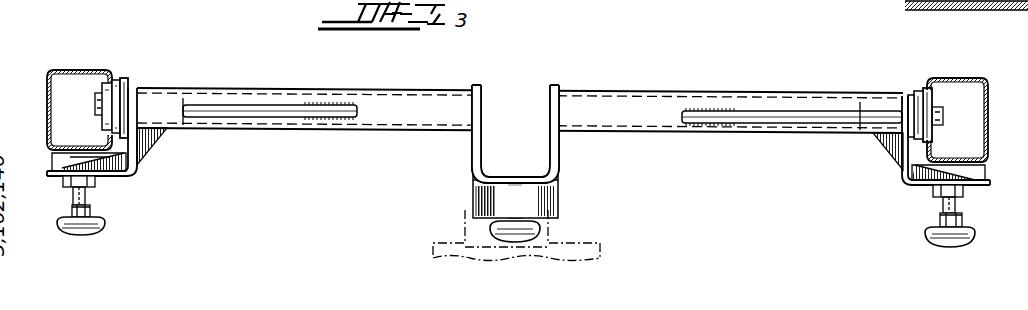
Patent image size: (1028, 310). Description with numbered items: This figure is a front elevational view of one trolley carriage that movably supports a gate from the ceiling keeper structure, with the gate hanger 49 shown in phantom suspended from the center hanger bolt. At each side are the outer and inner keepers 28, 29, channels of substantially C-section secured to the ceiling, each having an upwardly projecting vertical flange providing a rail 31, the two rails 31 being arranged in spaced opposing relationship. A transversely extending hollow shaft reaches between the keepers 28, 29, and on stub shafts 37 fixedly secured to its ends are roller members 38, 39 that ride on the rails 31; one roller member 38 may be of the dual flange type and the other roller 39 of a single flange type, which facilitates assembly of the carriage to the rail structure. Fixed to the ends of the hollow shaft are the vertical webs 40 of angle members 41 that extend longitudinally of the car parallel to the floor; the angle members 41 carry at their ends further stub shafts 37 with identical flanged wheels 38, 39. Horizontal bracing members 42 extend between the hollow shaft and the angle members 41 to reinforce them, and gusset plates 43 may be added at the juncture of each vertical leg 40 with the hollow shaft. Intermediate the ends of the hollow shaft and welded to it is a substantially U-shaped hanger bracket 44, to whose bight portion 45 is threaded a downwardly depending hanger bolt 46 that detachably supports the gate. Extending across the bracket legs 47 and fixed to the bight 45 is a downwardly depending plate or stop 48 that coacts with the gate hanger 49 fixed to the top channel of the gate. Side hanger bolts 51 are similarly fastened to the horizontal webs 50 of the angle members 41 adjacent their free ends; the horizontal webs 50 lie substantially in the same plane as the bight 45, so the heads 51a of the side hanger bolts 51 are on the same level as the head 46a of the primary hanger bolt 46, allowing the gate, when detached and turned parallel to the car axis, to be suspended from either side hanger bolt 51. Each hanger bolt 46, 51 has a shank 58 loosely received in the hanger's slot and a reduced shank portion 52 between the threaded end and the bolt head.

The outer keeper 28 is at (88, 70).
The inner keeper 29 is at (956, 78).
The rail 31 is at (100, 146).
The stub shaft 37 is at (96, 104).
The roller member 38 is at (123, 82).
The roller member 39 is at (922, 92).
The vertical web 40 is at (136, 162).
The angle member 41 is at (122, 180).
The horizontal bracing member 42 is at (279, 107).
The gusset plate 43 is at (160, 131).
The U-shaped hanger bracket 44 is at (473, 148).
The bight portion 45 is at (540, 186).
The hanger bolt 46 is at (497, 228).
The head 46a is at (541, 231).
The bracket leg 47 is at (515, 125).
The plate or stop 48 is at (474, 192).
The gate hanger 49 is at (462, 230).
The horizontal web 50 is at (55, 178).
The side hanger bolt 51 is at (72, 212).
The head 51a is at (78, 236).
The reduced shank portion 52 is at (86, 197).
The shank 58 is at (92, 212).